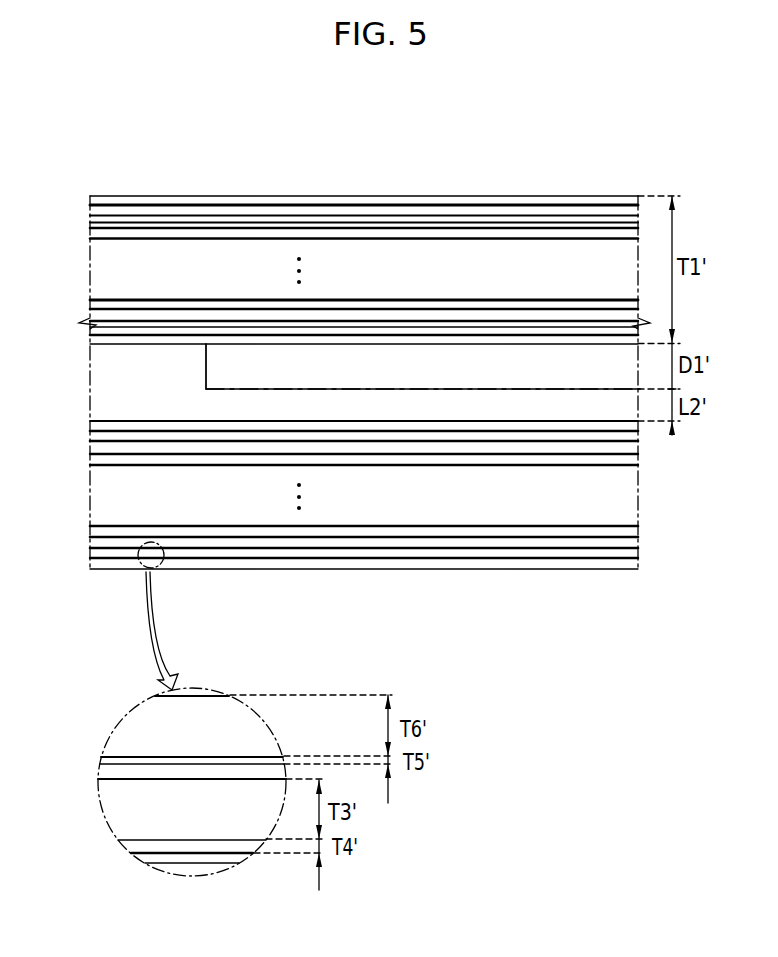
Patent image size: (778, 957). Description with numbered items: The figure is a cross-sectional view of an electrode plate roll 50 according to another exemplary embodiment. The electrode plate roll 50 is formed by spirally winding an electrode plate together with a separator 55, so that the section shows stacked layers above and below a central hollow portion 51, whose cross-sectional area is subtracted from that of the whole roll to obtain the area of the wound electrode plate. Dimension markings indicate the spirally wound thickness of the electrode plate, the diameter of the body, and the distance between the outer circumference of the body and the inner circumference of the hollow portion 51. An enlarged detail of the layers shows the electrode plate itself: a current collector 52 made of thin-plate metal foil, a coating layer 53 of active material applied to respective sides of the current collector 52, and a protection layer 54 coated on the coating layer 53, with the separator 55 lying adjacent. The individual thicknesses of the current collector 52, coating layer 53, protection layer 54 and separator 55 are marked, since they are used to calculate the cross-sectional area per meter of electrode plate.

The electrode plate roll 50 is at (361, 168).
The hollow portion 51 is at (110, 394).
The current collector 52 is at (122, 817).
The coating layer 53 is at (100, 777).
The protection layer 54 is at (103, 762).
The separator 55 is at (146, 714).